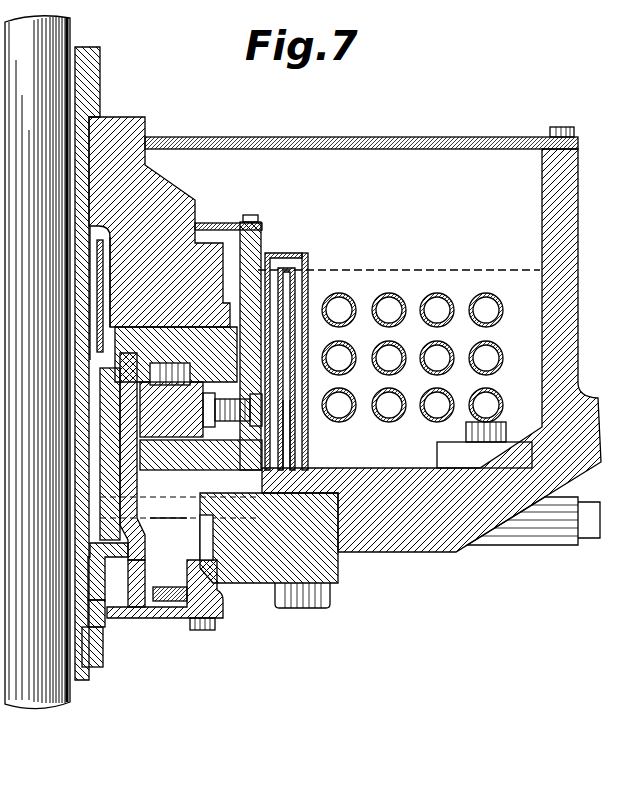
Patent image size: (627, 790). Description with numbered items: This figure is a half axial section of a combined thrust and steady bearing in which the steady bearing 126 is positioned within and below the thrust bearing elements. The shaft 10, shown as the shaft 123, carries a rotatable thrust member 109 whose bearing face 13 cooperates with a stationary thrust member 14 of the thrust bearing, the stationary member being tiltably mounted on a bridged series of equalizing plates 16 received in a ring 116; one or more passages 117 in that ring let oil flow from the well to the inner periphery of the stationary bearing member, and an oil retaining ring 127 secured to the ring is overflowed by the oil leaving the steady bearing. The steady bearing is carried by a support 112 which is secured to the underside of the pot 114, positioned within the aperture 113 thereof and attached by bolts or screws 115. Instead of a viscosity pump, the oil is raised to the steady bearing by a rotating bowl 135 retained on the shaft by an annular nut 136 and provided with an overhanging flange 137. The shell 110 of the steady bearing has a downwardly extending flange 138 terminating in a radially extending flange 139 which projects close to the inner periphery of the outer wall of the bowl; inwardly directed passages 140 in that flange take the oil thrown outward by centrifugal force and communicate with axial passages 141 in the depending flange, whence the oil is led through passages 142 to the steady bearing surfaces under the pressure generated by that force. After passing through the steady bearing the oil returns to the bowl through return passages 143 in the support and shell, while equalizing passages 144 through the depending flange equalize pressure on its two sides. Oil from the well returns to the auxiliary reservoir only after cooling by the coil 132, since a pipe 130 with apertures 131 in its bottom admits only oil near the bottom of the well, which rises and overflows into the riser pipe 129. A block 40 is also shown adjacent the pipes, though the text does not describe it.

The shaft 123 is at (80, 680).
The rotatable thrust member 109 is at (135, 253).
The shaft 10 is at (130, 337).
The oil retaining ring 127 is at (100, 295).
The bearing face 13 is at (97, 316).
The stationary thrust member 14 is at (98, 348).
The equalizing plates 16 is at (105, 398).
The steady bearing 126 is at (92, 445).
The shell 110 is at (110, 478).
The return passages 143 is at (118, 502).
The passages 142 is at (112, 535).
The downwardly extending flange 138 is at (88, 562).
The equalizing passages 144 is at (108, 622).
The radially extending flange 139 is at (147, 608).
The overhanging flange 137 is at (192, 535).
The axial passages 141 is at (187, 555).
The rotating bowl 135 is at (160, 600).
The inwardly directed passages 140 is at (200, 600).
The annular nut 136 is at (100, 650).
The support block 40 is at (262, 256).
The pipe 130 is at (284, 253).
The ring 116 is at (304, 352).
The riser pipe 129 is at (293, 270).
The passages 117 is at (310, 435).
The apertures 131 is at (304, 453).
The aperture 113 is at (262, 508).
The coil 132 is at (478, 297).
The pot 114 is at (419, 520).
The support 112 is at (256, 568).
The bolts or screws 115 is at (309, 600).